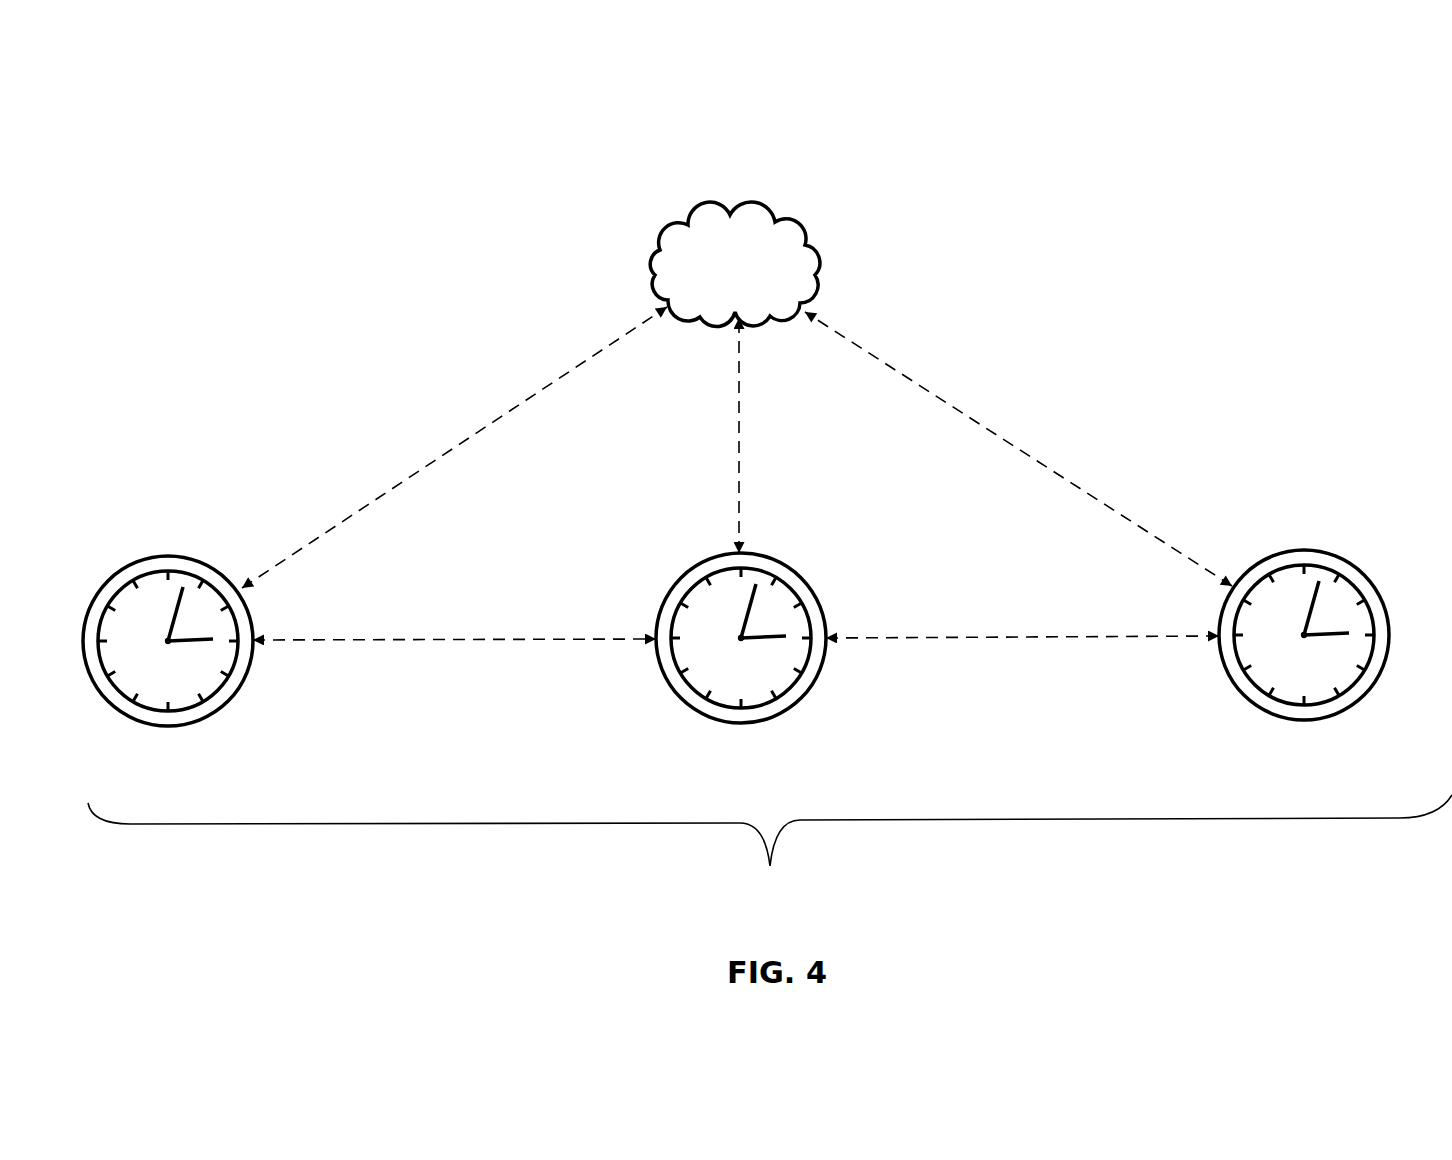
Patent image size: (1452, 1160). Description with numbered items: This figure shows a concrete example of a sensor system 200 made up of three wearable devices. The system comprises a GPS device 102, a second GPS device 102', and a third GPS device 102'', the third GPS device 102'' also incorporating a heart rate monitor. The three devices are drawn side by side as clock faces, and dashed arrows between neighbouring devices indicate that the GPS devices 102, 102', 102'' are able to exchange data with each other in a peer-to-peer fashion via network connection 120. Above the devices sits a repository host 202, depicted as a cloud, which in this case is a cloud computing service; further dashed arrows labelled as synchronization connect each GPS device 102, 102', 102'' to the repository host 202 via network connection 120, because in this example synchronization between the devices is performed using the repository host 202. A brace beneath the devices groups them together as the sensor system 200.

The repository host 202 is at (738, 212).
The GPS device 102 is at (175, 589).
The second GPS device 102' is at (712, 599).
The third GPS device 102'' is at (1302, 580).
The network connection 120 is at (525, 397).
The sensor system 200 is at (770, 856).